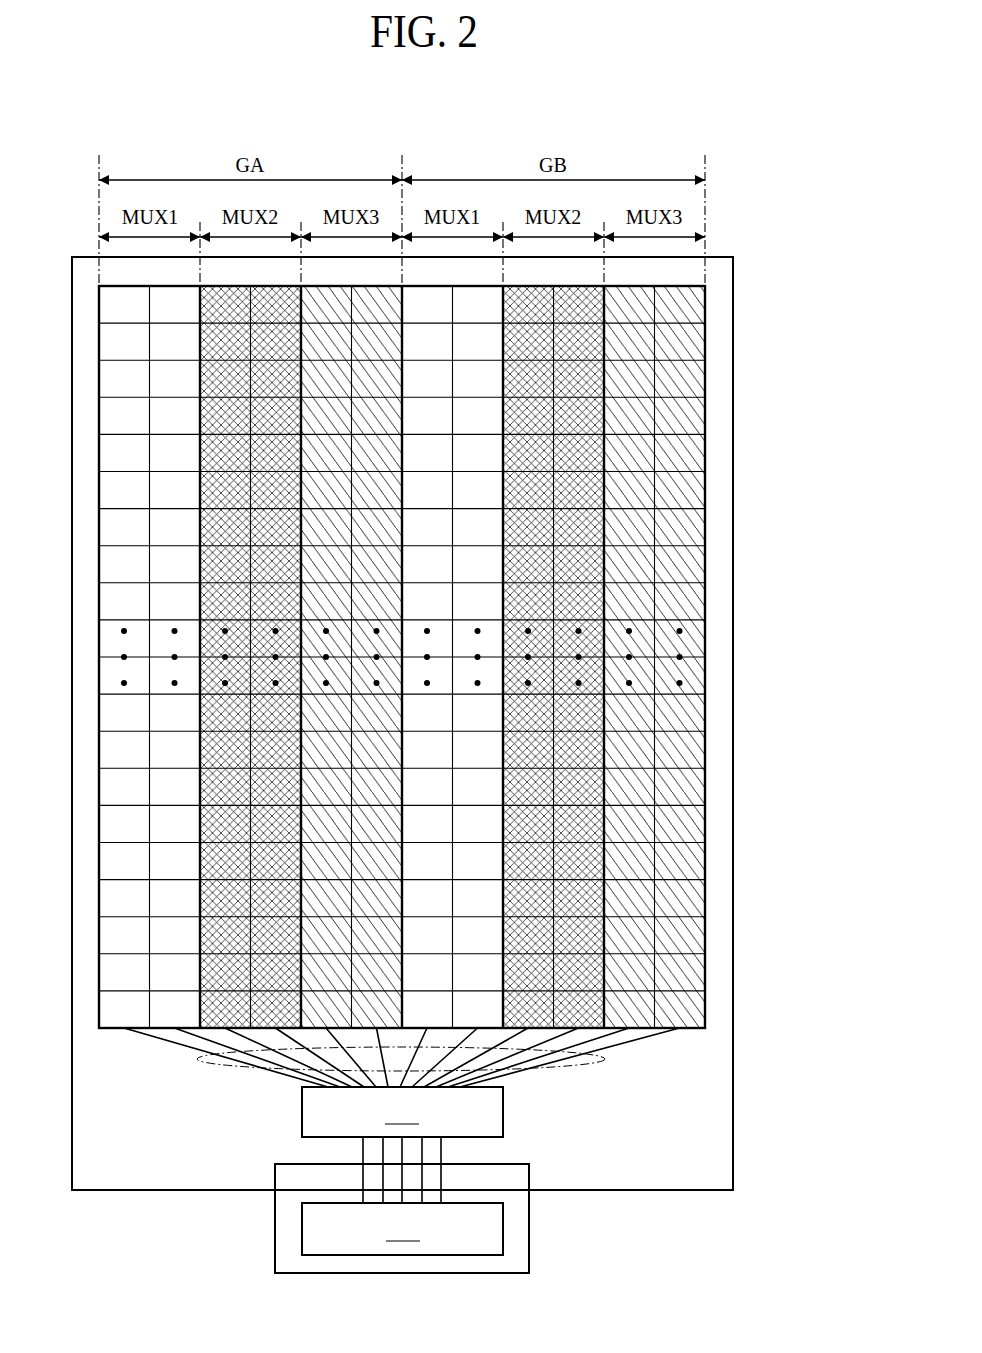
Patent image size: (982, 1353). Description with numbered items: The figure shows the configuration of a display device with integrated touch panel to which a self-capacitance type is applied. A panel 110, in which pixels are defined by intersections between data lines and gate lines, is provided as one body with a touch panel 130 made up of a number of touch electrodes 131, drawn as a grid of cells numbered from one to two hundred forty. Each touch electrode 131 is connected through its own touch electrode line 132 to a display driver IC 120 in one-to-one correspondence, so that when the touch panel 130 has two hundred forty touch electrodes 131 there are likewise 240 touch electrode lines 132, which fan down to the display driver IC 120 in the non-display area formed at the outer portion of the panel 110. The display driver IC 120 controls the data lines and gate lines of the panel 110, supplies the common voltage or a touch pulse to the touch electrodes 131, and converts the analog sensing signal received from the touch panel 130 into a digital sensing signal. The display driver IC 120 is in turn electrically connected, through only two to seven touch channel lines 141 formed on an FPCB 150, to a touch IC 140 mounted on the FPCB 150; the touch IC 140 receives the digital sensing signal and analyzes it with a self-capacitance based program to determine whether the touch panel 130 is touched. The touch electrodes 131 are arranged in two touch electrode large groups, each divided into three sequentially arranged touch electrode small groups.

The panel 110 is at (733, 598).
The display driver IC 120 is at (402, 1112).
The touch panel 130 is at (707, 377).
The touch electrode 131 is at (680, 494).
The touch electrode lines 132 is at (647, 1040).
The 240 lines 240 is at (605, 1058).
The touch IC 140 is at (402, 1229).
The touch channel lines 141 is at (441, 1148).
The FPCB 150 is at (529, 1228).